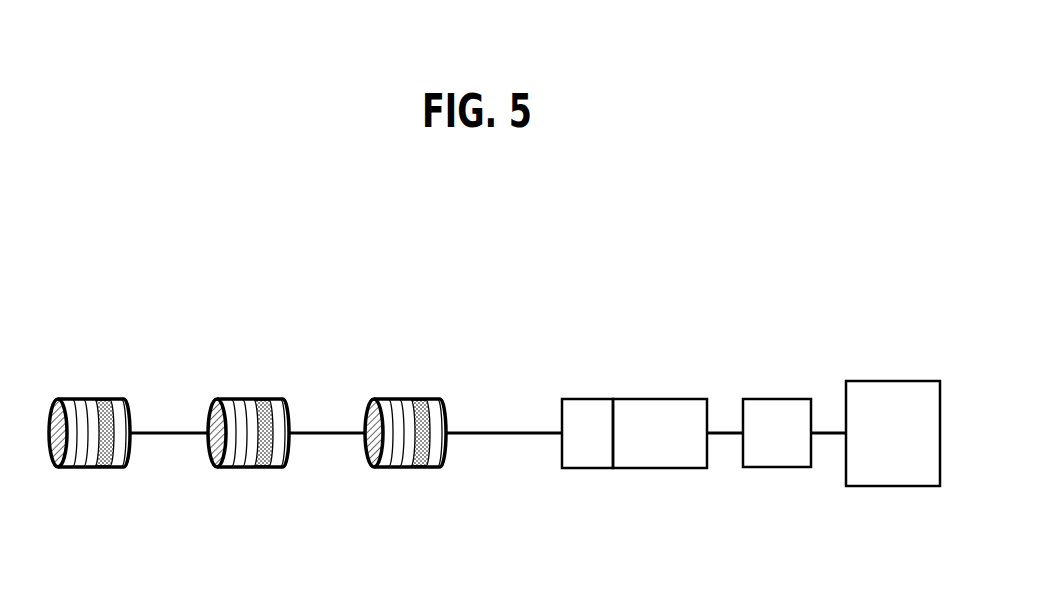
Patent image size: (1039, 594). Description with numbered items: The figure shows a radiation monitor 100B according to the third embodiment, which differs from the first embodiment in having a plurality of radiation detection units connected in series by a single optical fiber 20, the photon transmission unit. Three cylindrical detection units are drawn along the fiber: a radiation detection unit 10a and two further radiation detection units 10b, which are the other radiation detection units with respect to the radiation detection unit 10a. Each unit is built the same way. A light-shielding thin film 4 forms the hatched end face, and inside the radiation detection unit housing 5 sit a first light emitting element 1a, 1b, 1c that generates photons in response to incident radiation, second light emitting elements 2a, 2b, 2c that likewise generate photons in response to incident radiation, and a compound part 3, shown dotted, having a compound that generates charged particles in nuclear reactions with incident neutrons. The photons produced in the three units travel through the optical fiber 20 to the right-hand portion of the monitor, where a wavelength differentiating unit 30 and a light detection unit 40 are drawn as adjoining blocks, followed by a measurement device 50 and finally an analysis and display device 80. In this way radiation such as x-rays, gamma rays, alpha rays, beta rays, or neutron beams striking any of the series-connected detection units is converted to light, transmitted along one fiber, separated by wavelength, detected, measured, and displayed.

The radiation monitor 100B is at (540, 298).
The radiation detection unit 10a is at (29, 338).
The radiation detection unit 10b is at (188, 338).
The first light emitting element 1a is at (70, 408).
The first light emitting element 1b is at (229, 408).
The first light emitting element 1c is at (387, 408).
The second light emitting elements 2a is at (113, 460).
The second light emitting elements 2b is at (272, 460).
The second light emitting elements 2c is at (430, 460).
The compound part 3 is at (98, 408).
The light-shielding thin film 4 is at (50, 430).
The radiation detection unit housing 5 is at (130, 413).
The optical fiber 20 is at (170, 431).
The wavelength differentiating unit 30 is at (588, 398).
The light detection unit 40 is at (660, 398).
The measurement device 50 is at (778, 398).
The analysis and display device 80 is at (891, 380).